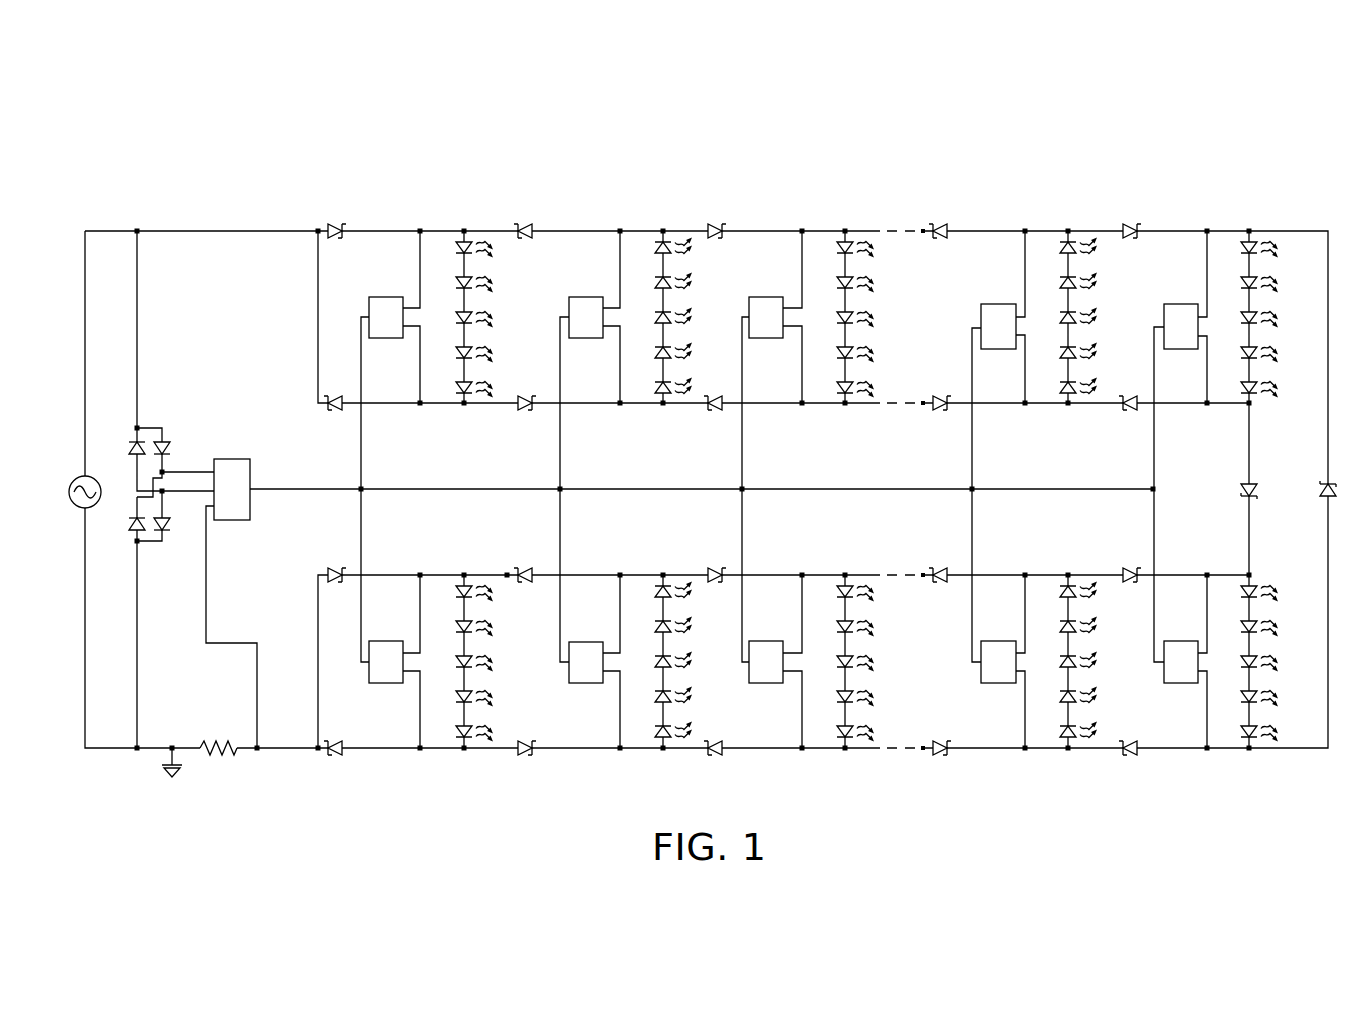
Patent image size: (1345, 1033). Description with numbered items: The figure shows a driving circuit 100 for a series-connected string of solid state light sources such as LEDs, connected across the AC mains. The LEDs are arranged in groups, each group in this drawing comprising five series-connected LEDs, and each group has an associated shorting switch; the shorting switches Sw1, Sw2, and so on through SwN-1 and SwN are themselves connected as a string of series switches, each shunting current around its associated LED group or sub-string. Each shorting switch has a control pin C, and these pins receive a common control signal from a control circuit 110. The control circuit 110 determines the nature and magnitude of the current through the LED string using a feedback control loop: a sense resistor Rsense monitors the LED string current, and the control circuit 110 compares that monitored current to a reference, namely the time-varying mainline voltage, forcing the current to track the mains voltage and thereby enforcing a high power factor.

The driving circuit 100 is at (702, 415).
The control circuit 110 is at (238, 513).
The shorting switch Sw1 is at (386, 310).
The shorting switch Sw2 is at (586, 310).
The shorting switch SwN is at (386, 654).
The shorting switch SwN-1 is at (584, 672).
The sense resistor Rsense is at (217, 737).